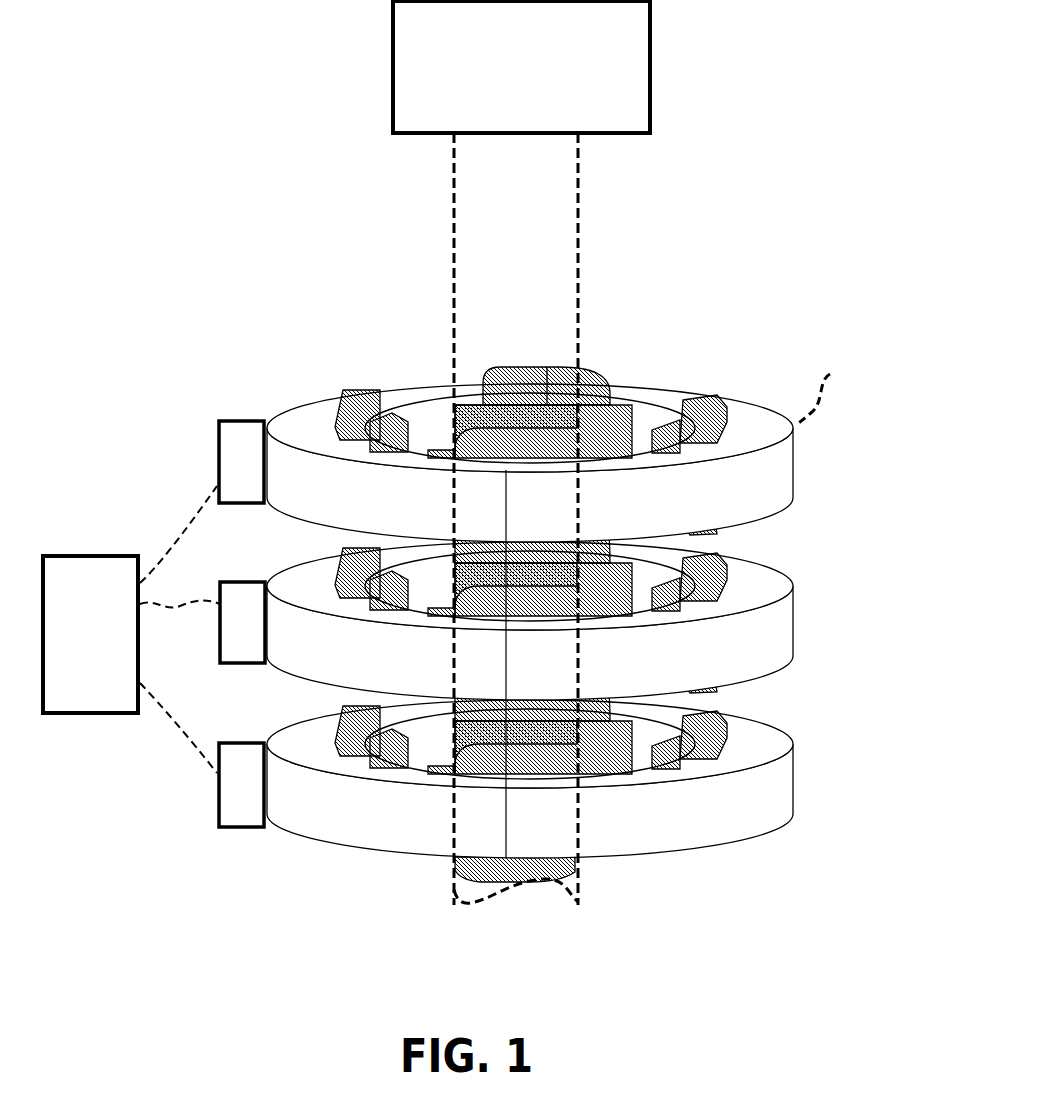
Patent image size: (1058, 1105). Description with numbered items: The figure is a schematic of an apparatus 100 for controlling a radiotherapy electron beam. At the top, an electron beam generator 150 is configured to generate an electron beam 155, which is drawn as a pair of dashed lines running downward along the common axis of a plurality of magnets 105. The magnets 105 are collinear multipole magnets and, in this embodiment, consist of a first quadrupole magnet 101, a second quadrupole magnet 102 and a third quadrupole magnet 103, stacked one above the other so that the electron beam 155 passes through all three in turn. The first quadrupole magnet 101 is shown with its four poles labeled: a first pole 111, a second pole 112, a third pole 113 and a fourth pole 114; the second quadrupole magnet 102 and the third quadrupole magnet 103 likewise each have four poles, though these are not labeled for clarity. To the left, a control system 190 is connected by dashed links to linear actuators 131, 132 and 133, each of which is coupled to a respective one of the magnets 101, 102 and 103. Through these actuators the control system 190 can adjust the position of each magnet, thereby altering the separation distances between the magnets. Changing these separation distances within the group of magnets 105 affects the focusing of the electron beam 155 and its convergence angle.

The apparatus 100 is at (699, 67).
The first quadrupole magnet 101 is at (544, 450).
The second quadrupole magnet 102 is at (785, 667).
The third quadrupole magnet 103 is at (785, 825).
The plurality of magnets 105 is at (586, 615).
The first pole 111 is at (346, 408).
The second pole 112 is at (568, 376).
The third pole 113 is at (711, 412).
The fourth pole 114 is at (530, 460).
The linear actuator 131 is at (218, 470).
The linear actuator 132 is at (220, 633).
The linear actuator 133 is at (218, 791).
The electron beam generator 150 is at (392, 78).
The electron beam 155 is at (455, 232).
The control system 190 is at (124, 556).